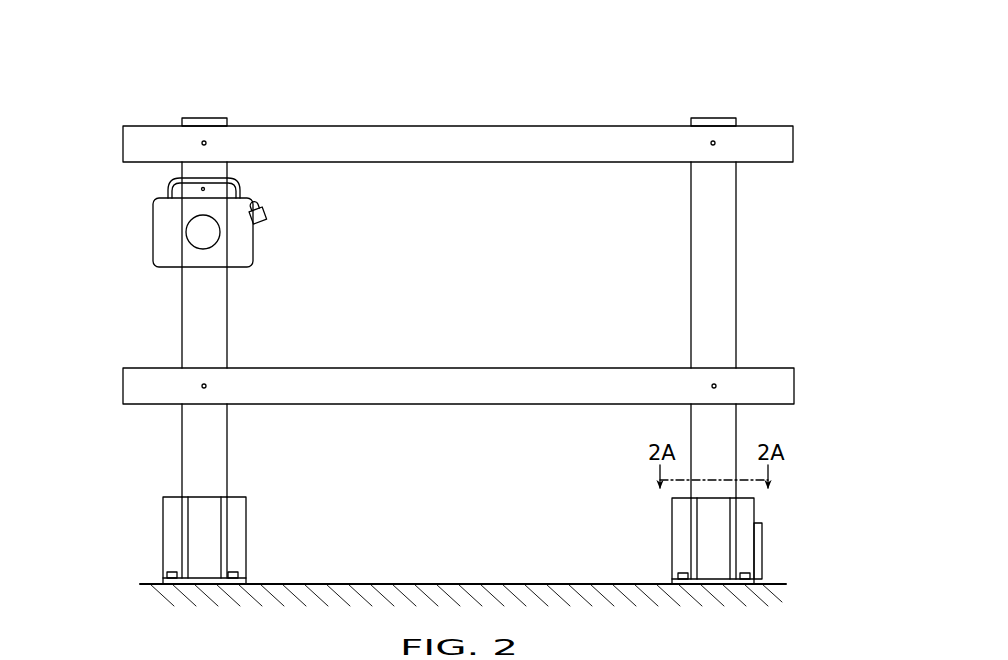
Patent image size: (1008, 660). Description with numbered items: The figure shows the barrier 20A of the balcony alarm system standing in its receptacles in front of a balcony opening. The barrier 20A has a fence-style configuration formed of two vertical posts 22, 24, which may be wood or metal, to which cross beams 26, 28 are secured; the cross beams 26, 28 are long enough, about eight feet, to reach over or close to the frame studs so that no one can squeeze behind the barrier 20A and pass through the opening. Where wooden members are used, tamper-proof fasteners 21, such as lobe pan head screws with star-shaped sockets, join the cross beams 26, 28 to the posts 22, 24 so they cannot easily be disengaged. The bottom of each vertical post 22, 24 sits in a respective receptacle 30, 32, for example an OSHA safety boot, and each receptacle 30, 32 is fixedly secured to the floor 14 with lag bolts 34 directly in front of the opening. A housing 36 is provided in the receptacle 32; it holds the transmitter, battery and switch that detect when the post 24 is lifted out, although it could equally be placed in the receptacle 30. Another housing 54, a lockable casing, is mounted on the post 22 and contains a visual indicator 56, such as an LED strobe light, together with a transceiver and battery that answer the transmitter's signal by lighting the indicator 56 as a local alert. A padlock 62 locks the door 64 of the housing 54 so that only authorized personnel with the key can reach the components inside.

The floor 14 is at (647, 586).
The barrier 20A is at (704, 54).
The tamper-proof fasteners 21 is at (206, 143).
The vertical post 22 is at (217, 293).
The vertical post 24 is at (690, 303).
The cross beam 26 is at (483, 145).
The cross beam 28 is at (482, 385).
The receptacle 30 is at (258, 511).
The receptacle 32 is at (672, 530).
The lag bolts 34 is at (233, 573).
The housing 36 is at (760, 538).
The housing 54 is at (138, 237).
The visual indicator/alarm 56 is at (185, 252).
The padlock 62 is at (212, 236).
The door 64 is at (255, 248).